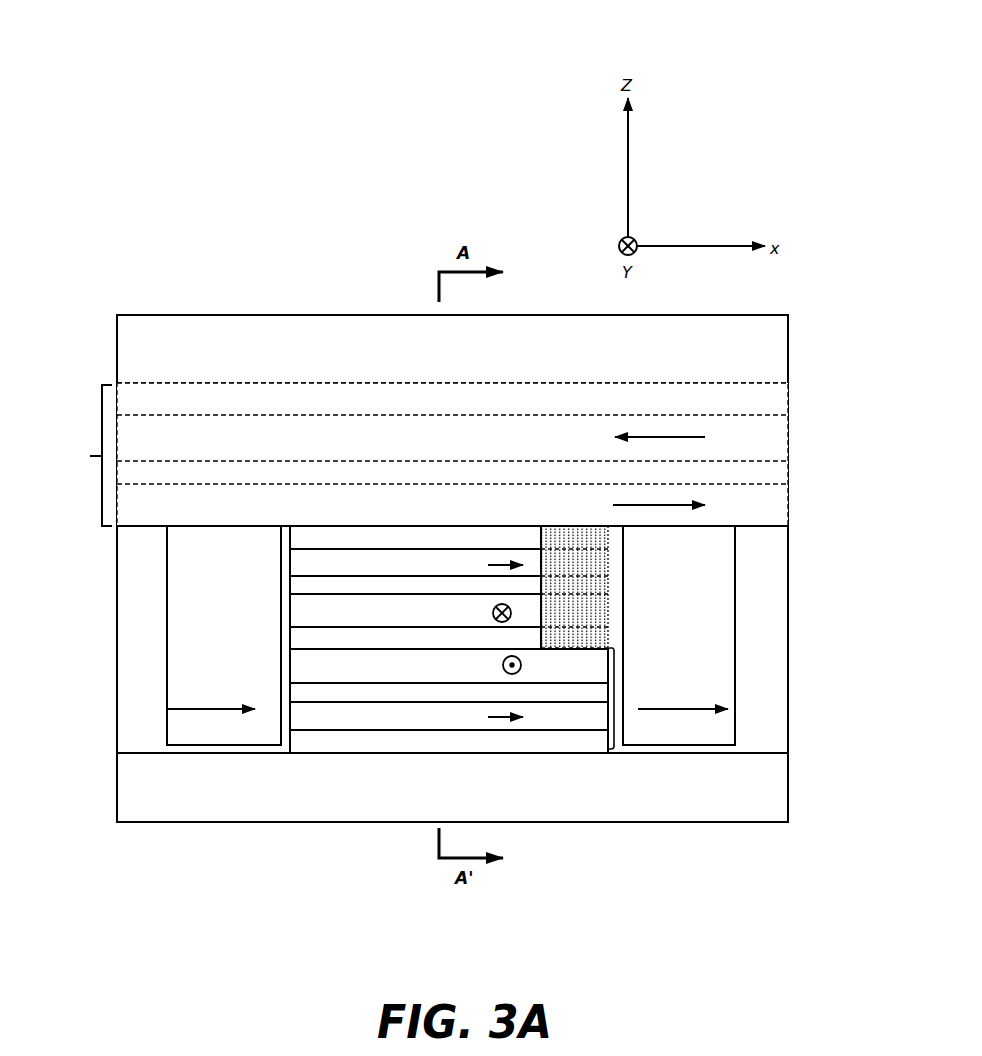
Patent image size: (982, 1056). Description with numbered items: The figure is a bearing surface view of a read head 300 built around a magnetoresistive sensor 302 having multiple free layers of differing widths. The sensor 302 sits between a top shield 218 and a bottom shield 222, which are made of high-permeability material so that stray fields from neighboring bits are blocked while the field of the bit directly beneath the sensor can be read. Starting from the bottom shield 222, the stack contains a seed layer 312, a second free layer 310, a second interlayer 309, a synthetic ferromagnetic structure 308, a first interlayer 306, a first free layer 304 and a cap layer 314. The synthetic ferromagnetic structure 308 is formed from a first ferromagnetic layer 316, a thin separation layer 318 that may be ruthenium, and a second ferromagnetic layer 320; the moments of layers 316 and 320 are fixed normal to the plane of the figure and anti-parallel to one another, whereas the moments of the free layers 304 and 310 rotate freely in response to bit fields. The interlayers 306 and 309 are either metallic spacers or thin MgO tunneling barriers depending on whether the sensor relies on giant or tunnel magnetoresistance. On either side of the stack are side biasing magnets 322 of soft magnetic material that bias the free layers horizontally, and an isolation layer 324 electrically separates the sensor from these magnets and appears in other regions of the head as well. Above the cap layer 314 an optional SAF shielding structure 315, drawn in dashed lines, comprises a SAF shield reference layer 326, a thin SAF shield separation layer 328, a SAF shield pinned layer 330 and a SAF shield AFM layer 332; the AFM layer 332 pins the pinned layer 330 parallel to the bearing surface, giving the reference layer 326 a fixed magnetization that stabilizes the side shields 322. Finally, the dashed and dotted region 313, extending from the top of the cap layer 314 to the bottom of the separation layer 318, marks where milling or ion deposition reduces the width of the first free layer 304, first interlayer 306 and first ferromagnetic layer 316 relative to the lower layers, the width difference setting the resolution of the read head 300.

The read head 300 is at (408, 218).
The magnetoresistive sensor 302 is at (830, 597).
The top shield 218 is at (563, 360).
The SAF shielding structure 315 is at (420, 454).
The SAF shield AFM layer 332 is at (563, 408).
The SAF shield pinned layer 330 is at (563, 446).
The SAF shield separation layer 328 is at (563, 480).
The SAF shield reference layer 326 is at (563, 513).
The cap layer 314 is at (362, 546).
The first free layer 304 is at (362, 573).
The first interlayer 306 is at (360, 593).
The first ferromagnetic layer 316 is at (362, 620).
The separation layer 318 is at (362, 647).
The second ferromagnetic layer 320 is at (400, 676).
The second interlayer 309 is at (397, 700).
The second free layer 310 is at (400, 725).
The seed layer 312 is at (400, 752).
The region 313 is at (580, 563).
The synthetic ferromagnetic structure 308 is at (618, 697).
The side biasing magnets 322 is at (695, 675).
The isolation layer 324 is at (286, 580).
The bottom shield 222 is at (555, 795).